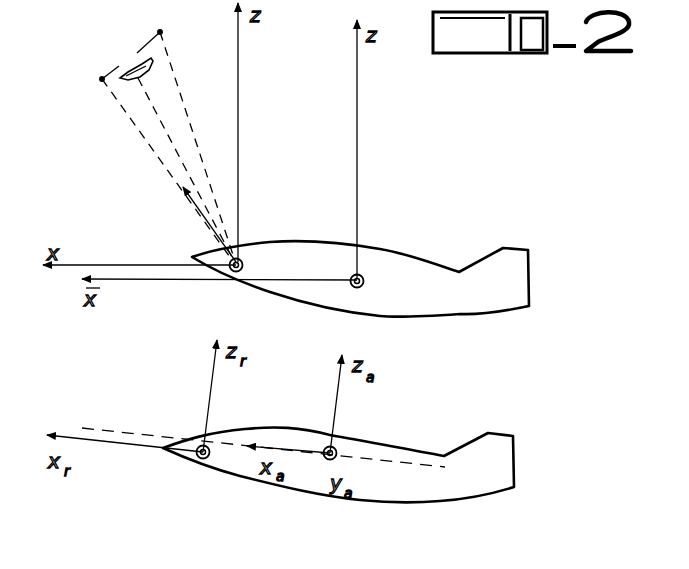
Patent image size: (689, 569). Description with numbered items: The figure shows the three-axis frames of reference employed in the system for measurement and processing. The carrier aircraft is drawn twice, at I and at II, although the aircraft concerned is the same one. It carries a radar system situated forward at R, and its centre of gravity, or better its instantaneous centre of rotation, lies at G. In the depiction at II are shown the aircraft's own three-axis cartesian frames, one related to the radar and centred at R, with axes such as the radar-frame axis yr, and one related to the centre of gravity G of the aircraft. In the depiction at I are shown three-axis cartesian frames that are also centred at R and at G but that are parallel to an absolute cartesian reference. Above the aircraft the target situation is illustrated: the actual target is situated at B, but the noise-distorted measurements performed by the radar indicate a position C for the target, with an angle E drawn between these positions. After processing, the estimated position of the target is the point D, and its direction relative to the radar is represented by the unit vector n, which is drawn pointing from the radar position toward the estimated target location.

The carrier aircraft (first depiction) I is at (360, 279).
The carrier aircraft (second depiction) II is at (338, 464).
The radar system position R is at (247, 265).
The centre of gravity G is at (351, 361).
The unit vector n is at (172, 190).
The measured target position C is at (170, 30).
The estimated target position D is at (90, 68).
The angle epsilon E is at (135, 36).
The target B is at (136, 63).
The radar frame y-axis yr is at (216, 461).